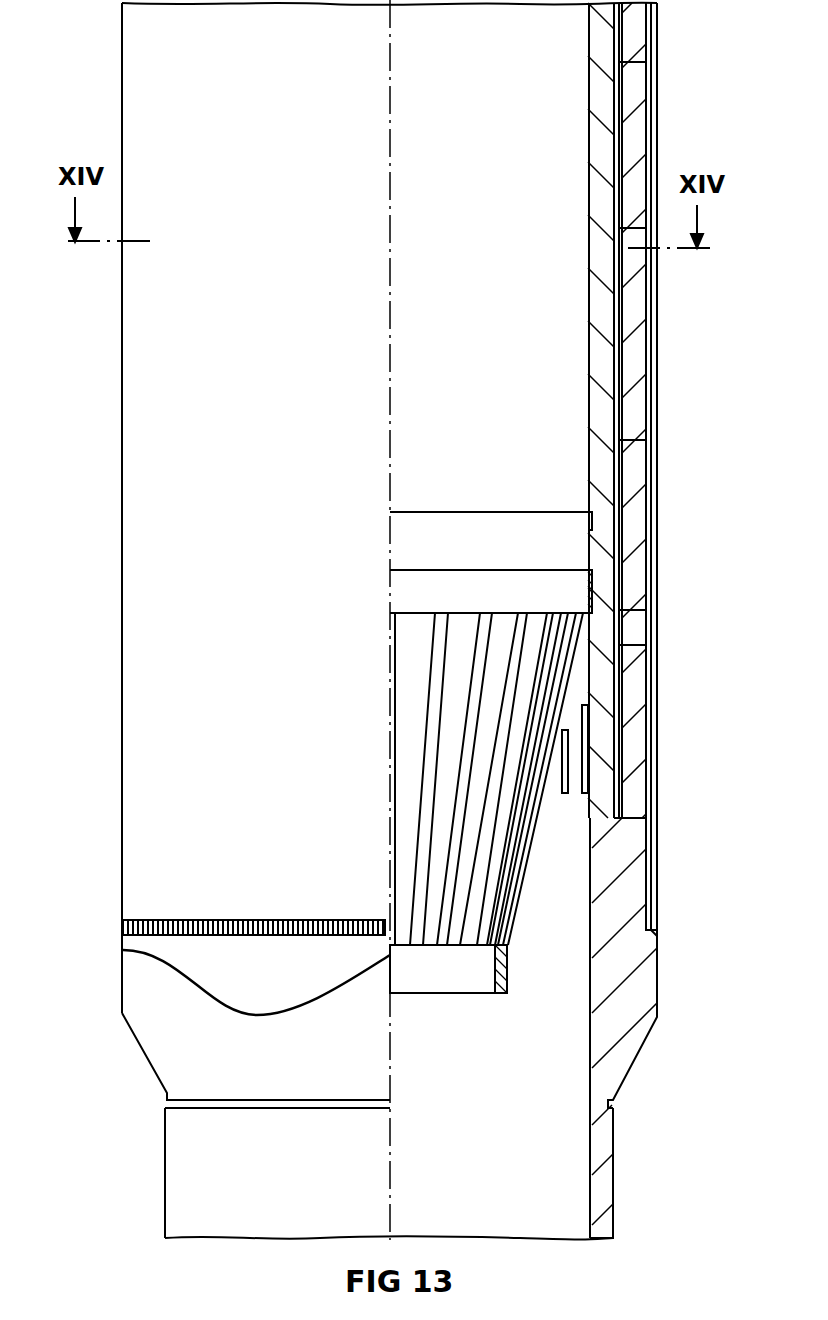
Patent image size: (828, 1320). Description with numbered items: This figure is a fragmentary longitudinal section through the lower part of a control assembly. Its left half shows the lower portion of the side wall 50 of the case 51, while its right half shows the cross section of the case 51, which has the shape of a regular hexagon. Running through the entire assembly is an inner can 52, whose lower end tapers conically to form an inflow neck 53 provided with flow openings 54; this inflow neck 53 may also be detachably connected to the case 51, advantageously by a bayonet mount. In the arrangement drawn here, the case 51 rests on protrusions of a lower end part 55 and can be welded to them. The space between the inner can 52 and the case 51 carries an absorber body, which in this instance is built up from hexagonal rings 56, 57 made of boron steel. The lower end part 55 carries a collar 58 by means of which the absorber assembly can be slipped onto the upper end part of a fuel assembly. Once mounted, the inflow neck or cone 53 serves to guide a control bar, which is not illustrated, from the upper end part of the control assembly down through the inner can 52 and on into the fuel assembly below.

The side wall 50 is at (121, 789).
The case 51 is at (652, 80).
The inner can 52 is at (588, 152).
The inflow neck 53 is at (509, 970).
The flow openings 54 is at (498, 865).
The lower end part 55 is at (622, 1057).
The hexagonal ring 56 is at (638, 485).
The hexagonal ring 57 is at (637, 333).
The collar 58 is at (606, 1198).